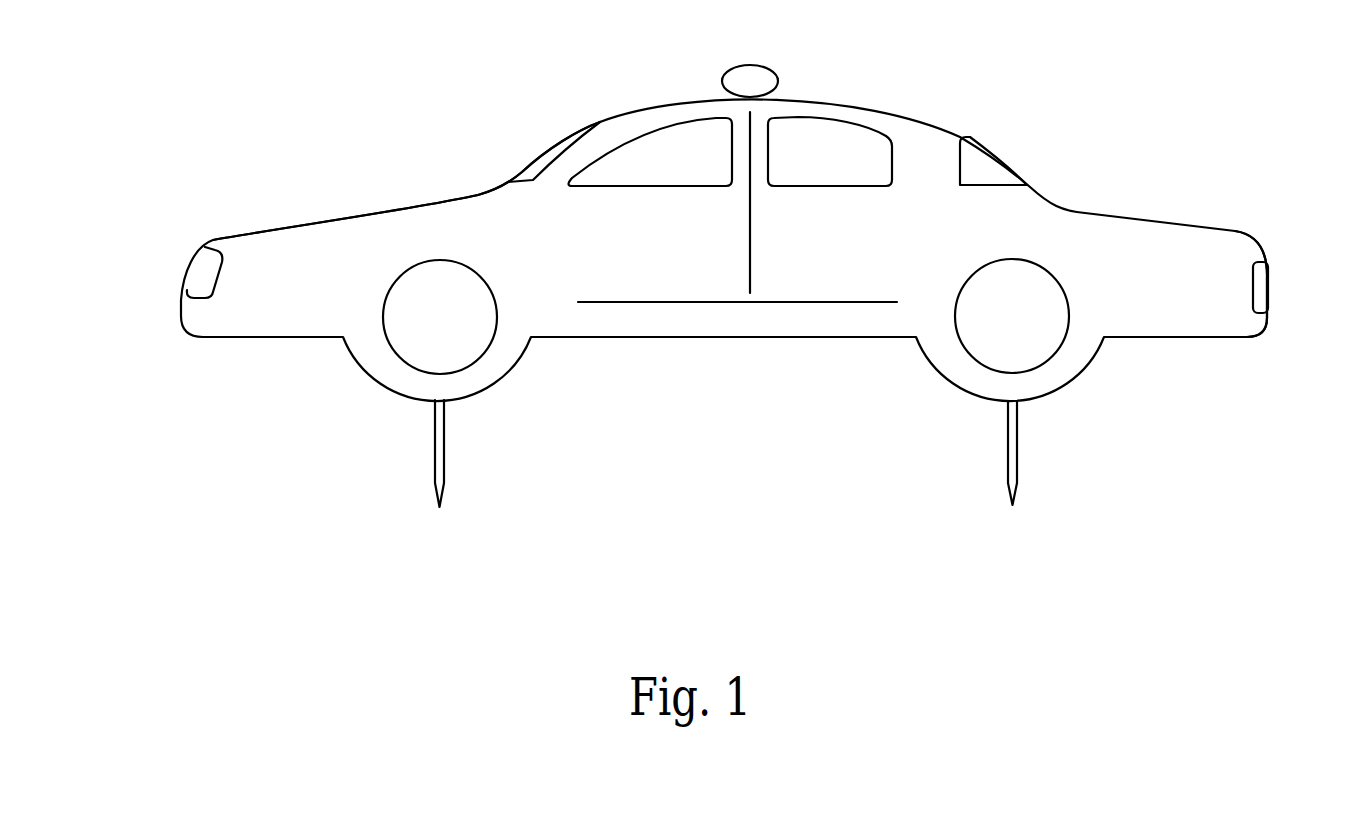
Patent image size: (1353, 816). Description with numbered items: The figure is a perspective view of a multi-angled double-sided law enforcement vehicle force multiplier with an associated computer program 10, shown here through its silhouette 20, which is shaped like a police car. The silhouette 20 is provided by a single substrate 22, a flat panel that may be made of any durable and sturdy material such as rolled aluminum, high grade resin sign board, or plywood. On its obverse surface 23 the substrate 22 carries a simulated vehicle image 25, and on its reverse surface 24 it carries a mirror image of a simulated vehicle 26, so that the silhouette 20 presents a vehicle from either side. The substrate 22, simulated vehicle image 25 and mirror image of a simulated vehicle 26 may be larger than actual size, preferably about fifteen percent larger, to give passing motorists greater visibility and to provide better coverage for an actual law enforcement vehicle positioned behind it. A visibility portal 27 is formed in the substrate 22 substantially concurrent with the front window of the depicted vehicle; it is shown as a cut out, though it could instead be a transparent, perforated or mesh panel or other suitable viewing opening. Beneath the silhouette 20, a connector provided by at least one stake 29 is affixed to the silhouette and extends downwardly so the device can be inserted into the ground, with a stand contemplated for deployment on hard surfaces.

The multi-angled double-sided law enforcement vehicle force multiplier with an assoc 10 is at (1156, 214).
The silhouette 20 is at (160, 325).
The substrate 22 is at (1237, 248).
The obverse surface 23 is at (690, 303).
The reverse surface 24 is at (546, 128).
The simulated vehicle image 25 is at (363, 230).
The mirror image of a simulated vehicle 26 is at (965, 120).
The visibility portal 27 is at (685, 142).
The stake 29 is at (435, 462).